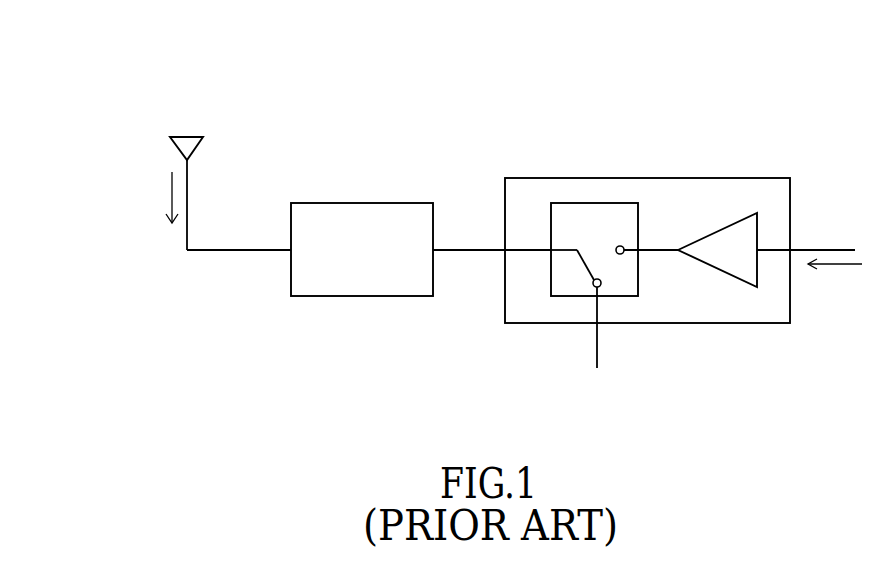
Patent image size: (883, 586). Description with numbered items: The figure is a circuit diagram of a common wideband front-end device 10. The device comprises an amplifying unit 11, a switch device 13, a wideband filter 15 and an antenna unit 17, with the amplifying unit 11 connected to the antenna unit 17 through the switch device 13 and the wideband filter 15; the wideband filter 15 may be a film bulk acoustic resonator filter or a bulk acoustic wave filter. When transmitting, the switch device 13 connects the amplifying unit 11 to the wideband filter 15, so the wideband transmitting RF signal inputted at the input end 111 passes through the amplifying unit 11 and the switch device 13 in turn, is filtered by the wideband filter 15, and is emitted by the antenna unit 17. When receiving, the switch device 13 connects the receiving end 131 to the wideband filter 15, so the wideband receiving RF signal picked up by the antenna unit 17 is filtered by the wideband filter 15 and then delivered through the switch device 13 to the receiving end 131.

The wideband front-end device 10 is at (84, 47).
The amplifying unit 11 is at (745, 225).
The input end 111 is at (823, 248).
The switch device 13 is at (593, 212).
The receiving end 131 is at (600, 348).
The wideband filter 15 is at (362, 213).
The antenna unit 17 is at (198, 126).